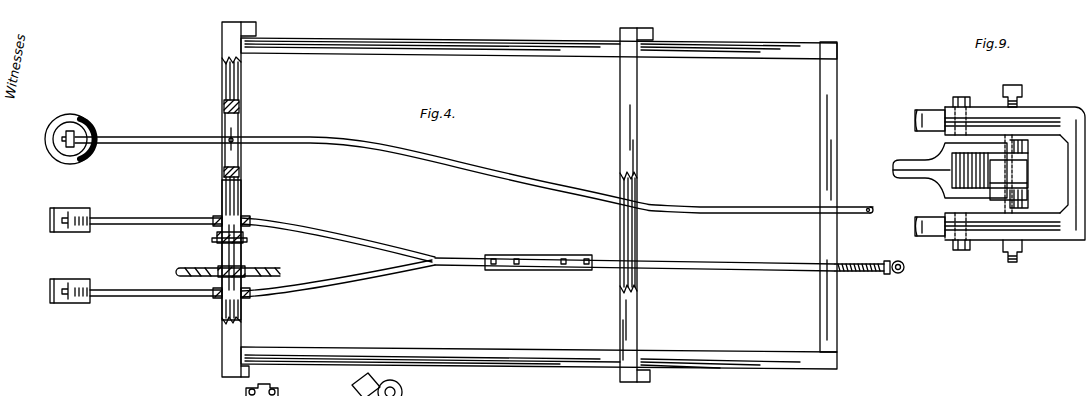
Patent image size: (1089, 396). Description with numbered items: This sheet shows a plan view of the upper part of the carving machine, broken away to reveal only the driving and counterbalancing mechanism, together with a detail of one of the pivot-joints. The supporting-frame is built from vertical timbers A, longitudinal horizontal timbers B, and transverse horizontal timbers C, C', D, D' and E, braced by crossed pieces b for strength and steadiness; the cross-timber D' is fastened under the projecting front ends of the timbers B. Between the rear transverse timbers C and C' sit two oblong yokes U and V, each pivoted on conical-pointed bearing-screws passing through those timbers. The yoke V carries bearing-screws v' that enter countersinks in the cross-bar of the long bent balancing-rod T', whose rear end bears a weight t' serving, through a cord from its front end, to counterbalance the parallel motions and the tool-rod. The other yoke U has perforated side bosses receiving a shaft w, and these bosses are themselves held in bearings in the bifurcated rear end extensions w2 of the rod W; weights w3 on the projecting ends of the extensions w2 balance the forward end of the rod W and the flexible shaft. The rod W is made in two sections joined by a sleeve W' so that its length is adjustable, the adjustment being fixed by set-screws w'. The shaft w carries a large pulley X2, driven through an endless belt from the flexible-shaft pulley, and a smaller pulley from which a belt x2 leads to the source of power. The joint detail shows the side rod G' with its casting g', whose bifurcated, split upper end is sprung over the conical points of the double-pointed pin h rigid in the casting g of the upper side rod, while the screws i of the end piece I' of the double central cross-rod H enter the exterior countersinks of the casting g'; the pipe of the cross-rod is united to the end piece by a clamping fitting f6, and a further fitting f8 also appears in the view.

In FIG. 4, the vertical timbers A is at (258, 30).
In FIG. 4, the longitudinal horizontal timbers B is at (498, 39).
In FIG. 4, the rear transverse horizontal timber C is at (220, 199).
In FIG. 4, the rear transverse horizontal timber C' is at (242, 250).
In FIG. 4, the transverse horizontal timber D is at (616, 205).
In FIG. 4, the cross-timber D' is at (816, 197).
In FIG. 4, the transverse horizontal timber E is at (640, 230).
In FIG. 4, the balancing-rod T' is at (474, 175).
In FIG. 4, the yoke V is at (240, 110).
In FIG. 4, the bearing-screws v' is at (243, 134).
In FIG. 4, the crossed bracing pieces b is at (238, 135).
In FIG. 4, the weight t' is at (78, 139).
In FIG. 4, the yoke U is at (244, 242).
In FIG. 4, the belt x2 is at (213, 242).
In FIG. 4, the large pulley X2 is at (182, 268).
In FIG. 4, the shaft w is at (251, 257).
In FIG. 4, the weights w3 is at (71, 232).
In FIG. 4, the bifurcated rear end extensions w2 is at (262, 257).
In FIG. 4, the rod W is at (669, 255).
In FIG. 4, the sleeve W' is at (538, 271).
In FIG. 4, the set-screws w' is at (540, 248).
In FIG. 4, the side rods G' is at (271, 385).
In FIG. 4, the roller f8 is at (408, 390).
In FIG. 9, the double central cross-rod H is at (927, 110).
In FIG. 9, the end piece I' is at (1015, 162).
In FIG. 9, the screws f6 is at (958, 97).
In FIG. 9, the screws i is at (1022, 91).
In FIG. 9, the casting g' is at (950, 170).
In FIG. 9, the casting g is at (1000, 174).
In FIG. 9, the double-pointed pin h is at (1028, 188).